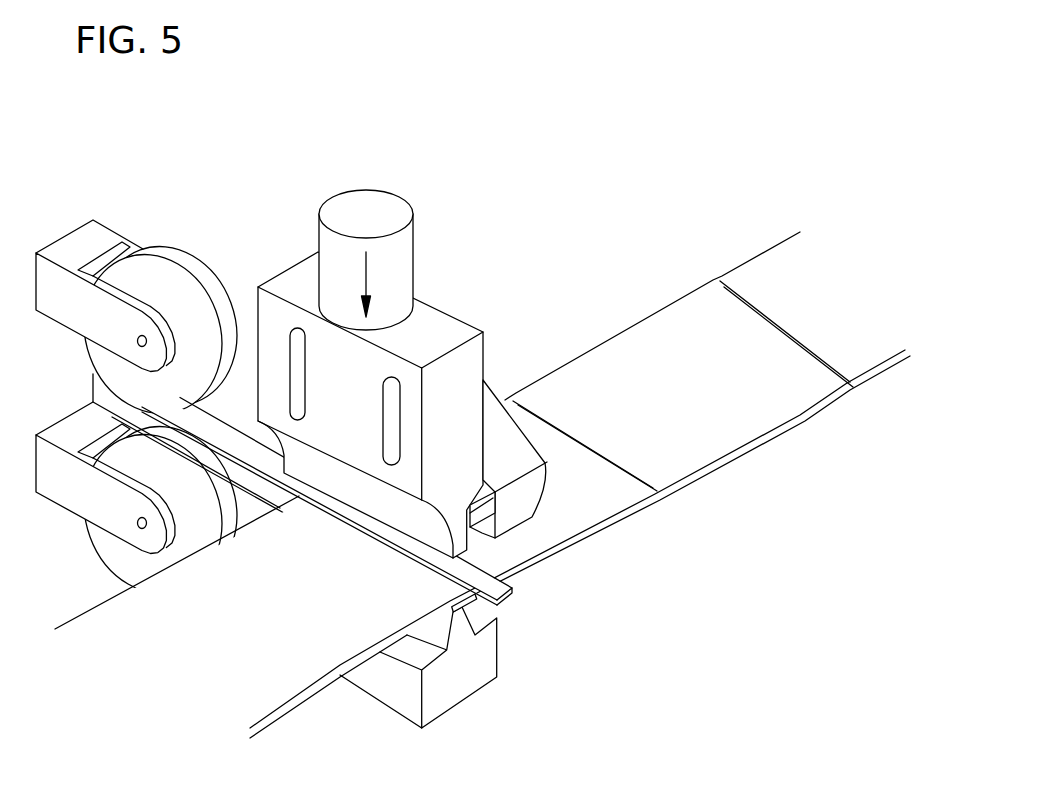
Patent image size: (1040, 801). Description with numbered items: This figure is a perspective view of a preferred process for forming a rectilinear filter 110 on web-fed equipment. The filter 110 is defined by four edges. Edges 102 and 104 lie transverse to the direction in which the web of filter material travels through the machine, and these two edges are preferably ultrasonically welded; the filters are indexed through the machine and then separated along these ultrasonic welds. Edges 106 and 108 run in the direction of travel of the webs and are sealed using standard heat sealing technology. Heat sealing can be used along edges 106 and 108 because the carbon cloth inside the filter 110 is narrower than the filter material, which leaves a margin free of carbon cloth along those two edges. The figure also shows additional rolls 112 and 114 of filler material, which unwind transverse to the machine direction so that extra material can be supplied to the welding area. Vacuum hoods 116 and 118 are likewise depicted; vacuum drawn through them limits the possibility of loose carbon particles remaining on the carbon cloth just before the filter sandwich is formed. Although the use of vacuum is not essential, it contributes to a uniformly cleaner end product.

The edge 102 is at (583, 437).
The edge 104 is at (788, 328).
The edge 106 is at (610, 335).
The edge 108 is at (720, 460).
The filter 110 is at (726, 391).
The roll of filler material 112 is at (148, 285).
The roll of filler material 114 is at (110, 548).
The vacuum hood 116 is at (531, 623).
The vacuum hood 118 is at (503, 537).